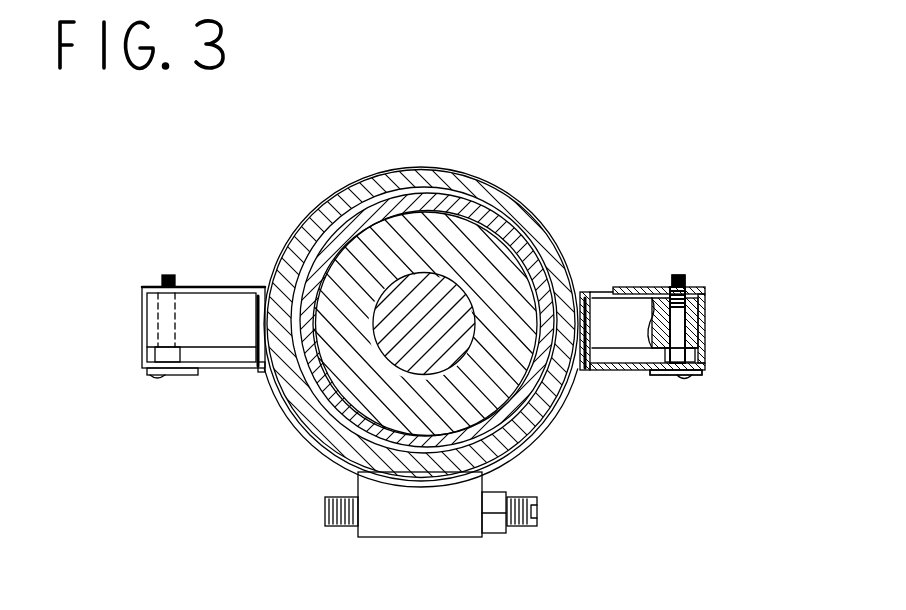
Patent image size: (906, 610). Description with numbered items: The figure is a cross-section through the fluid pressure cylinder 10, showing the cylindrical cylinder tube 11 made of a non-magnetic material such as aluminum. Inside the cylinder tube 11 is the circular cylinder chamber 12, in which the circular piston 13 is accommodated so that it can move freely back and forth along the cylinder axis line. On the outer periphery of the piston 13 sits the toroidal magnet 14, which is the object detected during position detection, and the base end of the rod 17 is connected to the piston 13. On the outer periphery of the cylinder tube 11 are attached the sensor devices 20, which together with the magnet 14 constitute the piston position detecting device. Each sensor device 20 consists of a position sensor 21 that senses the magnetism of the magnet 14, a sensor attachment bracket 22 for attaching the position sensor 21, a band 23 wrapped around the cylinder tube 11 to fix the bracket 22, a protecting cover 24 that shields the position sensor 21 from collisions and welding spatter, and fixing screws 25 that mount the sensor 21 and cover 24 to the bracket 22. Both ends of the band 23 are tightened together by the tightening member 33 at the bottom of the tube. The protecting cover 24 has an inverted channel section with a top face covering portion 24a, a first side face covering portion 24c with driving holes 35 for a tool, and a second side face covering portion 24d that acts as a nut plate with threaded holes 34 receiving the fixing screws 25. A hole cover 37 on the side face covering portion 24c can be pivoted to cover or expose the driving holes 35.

The fluid pressure cylinder 10 is at (505, 170).
The cylinder tube 11 is at (415, 182).
The cylinder chamber 12 is at (518, 232).
The piston 13 is at (374, 240).
The magnet 14 is at (342, 233).
The rod 17 is at (388, 342).
The sensor device 20 is at (178, 260).
The position sensor 21 is at (227, 337).
The sensor attachment bracket 22 is at (252, 297).
The band 23 is at (326, 456).
The protecting cover 24 is at (138, 300).
The top face covering portion 24a is at (705, 312).
The first side face covering portion 24c is at (655, 376).
The second side face covering portion 24d is at (642, 288).
The fixing screw 25 is at (158, 357).
The tightening member 33 is at (427, 530).
The threaded hole 34 is at (680, 276).
The driving hole 35 is at (685, 382).
The hole cover 37 is at (173, 376).